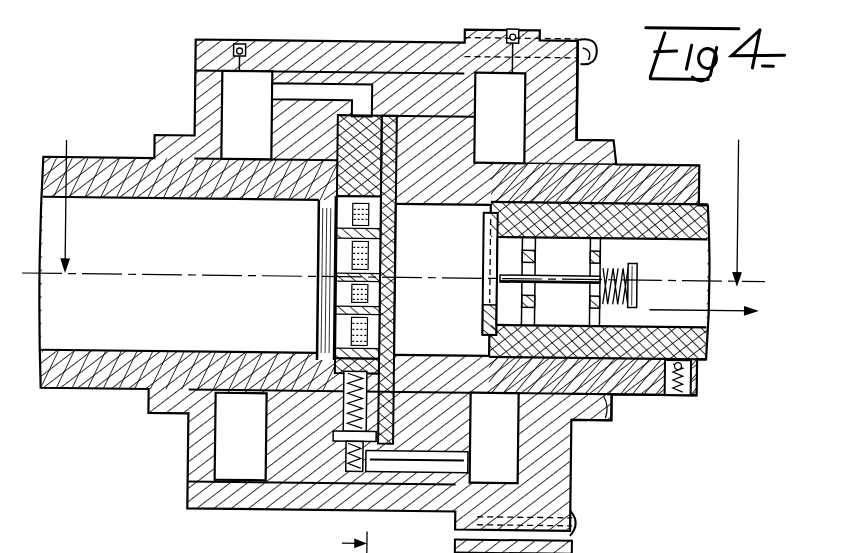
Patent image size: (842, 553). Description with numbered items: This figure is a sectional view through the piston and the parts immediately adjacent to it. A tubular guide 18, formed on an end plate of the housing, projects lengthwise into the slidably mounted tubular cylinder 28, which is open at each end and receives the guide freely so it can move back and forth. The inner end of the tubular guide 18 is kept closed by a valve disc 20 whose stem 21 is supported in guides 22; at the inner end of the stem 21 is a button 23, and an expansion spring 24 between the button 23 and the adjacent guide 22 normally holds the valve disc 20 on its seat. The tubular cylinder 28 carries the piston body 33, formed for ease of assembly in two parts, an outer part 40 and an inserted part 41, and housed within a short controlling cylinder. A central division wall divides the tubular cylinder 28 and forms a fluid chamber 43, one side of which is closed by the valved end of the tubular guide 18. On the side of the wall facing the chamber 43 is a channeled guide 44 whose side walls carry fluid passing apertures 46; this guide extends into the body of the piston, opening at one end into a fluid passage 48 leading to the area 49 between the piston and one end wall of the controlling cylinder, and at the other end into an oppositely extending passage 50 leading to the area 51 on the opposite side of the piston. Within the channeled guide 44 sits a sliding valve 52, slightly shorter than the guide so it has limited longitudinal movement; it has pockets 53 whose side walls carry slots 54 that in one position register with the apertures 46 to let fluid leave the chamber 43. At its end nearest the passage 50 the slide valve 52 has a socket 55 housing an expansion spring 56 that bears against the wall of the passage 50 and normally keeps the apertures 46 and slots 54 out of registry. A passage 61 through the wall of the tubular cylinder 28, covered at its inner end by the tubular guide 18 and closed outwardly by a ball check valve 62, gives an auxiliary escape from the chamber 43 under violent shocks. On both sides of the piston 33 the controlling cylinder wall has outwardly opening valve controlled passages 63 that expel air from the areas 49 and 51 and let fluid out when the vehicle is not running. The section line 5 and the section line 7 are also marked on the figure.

The section line 5- 5 is at (402, 198).
The section line 7- 7 is at (354, 533).
The tubular guide 18 is at (700, 338).
The valve disc 20 is at (482, 297).
The stem 21 is at (552, 270).
The guides 22 is at (624, 392).
The button 23 is at (638, 266).
The spring 24 is at (622, 306).
The tubular cylinder 28 is at (655, 163).
The piston body 33 is at (272, 444).
The outer part 40 is at (275, 467).
The inserted part 41 is at (560, 118).
The fluid chamber 43 is at (483, 182).
The channeled guide 44 is at (382, 322).
The fluid passing apertures 46 is at (378, 288).
The fluid passage 48 is at (340, 88).
The area 49 is at (232, 105).
The passage 50 is at (436, 466).
The area 51 is at (567, 452).
The sliding valve 52 is at (300, 196).
The pockets 53 is at (372, 231).
The slots 54 is at (350, 250).
The socket 55 is at (340, 382).
The expansion spring 56 is at (337, 467).
The passage 61 is at (700, 376).
The ball check valve 62 is at (692, 360).
The valve controlled passage 63 is at (240, 44).